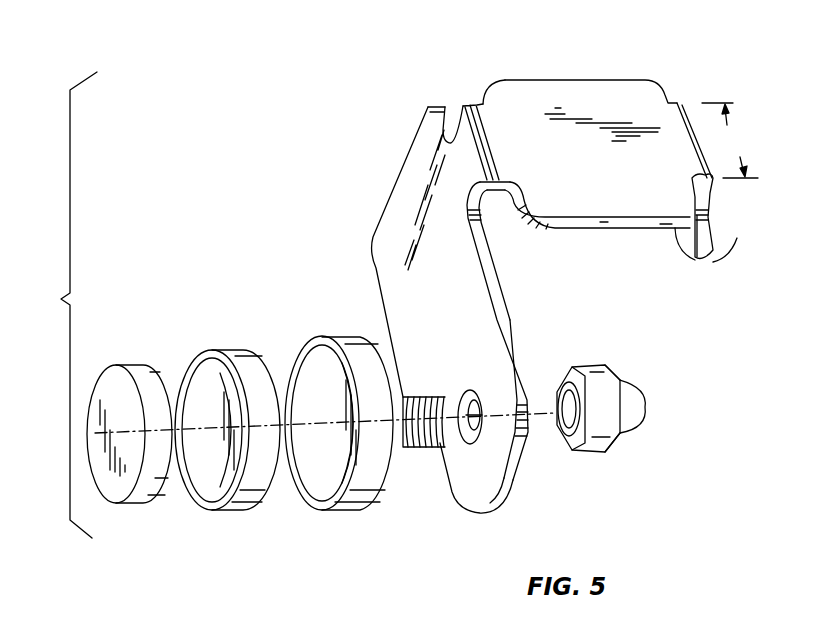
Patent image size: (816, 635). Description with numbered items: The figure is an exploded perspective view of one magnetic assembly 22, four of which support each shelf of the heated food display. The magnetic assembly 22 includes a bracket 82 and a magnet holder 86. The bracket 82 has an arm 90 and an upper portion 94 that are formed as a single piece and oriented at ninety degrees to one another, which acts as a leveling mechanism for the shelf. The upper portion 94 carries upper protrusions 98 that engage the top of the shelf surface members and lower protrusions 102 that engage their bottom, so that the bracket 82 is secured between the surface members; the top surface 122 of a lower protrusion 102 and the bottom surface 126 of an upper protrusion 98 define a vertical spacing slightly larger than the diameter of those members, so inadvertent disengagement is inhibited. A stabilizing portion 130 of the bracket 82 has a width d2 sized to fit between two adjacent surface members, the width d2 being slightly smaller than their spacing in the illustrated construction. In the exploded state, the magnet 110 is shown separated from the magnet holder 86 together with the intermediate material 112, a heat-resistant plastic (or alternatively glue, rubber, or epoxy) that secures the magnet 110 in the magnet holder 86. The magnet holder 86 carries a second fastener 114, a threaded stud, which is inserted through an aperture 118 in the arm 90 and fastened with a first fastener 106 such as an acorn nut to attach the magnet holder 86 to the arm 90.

The magnetic assembly 22 is at (65, 305).
The bracket 82 is at (660, 55).
The magnet holder 86 is at (352, 345).
The arm 90 is at (490, 352).
The upper portion 94 is at (585, 140).
The upper protrusion 98 is at (639, 88).
The lower protrusion 102 is at (428, 127).
The first fastener 106 is at (635, 404).
The magnet 110 is at (140, 370).
The intermediate material 112 is at (248, 367).
The second fastener 114 is at (423, 445).
The aperture 118 is at (450, 428).
The top surface 122 is at (449, 122).
The bottom surface 126 is at (562, 232).
The stabilizing portion 130 is at (480, 122).
The width d2 is at (730, 140).